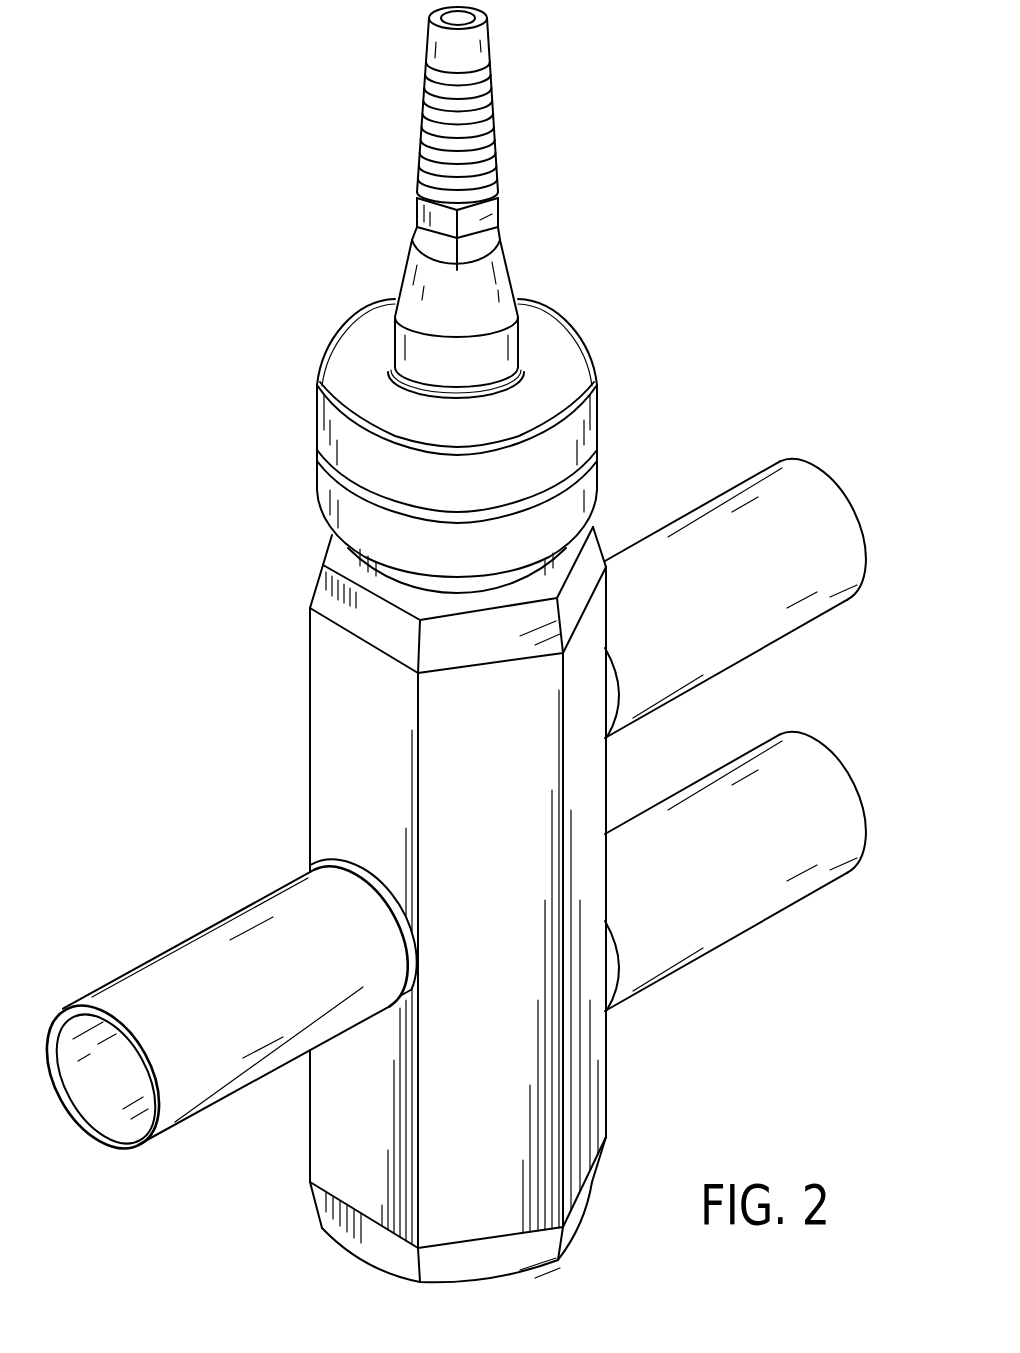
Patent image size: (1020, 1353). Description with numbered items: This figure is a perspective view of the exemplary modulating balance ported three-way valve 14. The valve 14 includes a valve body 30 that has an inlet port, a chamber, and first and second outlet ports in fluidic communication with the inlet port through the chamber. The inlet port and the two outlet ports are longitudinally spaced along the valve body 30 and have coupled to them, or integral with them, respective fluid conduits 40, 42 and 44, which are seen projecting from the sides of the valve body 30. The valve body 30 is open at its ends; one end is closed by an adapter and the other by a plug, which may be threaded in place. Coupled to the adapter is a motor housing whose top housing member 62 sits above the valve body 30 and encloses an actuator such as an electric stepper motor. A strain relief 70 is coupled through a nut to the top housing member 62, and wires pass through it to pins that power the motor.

The valve 14 is at (802, 150).
The strain relief 70 is at (497, 135).
The top housing member 62 is at (597, 388).
The valve body 30 is at (600, 1062).
The fluid conduit 40 is at (212, 946).
The fluid conduit 42 is at (712, 515).
The fluid conduit 44 is at (733, 913).